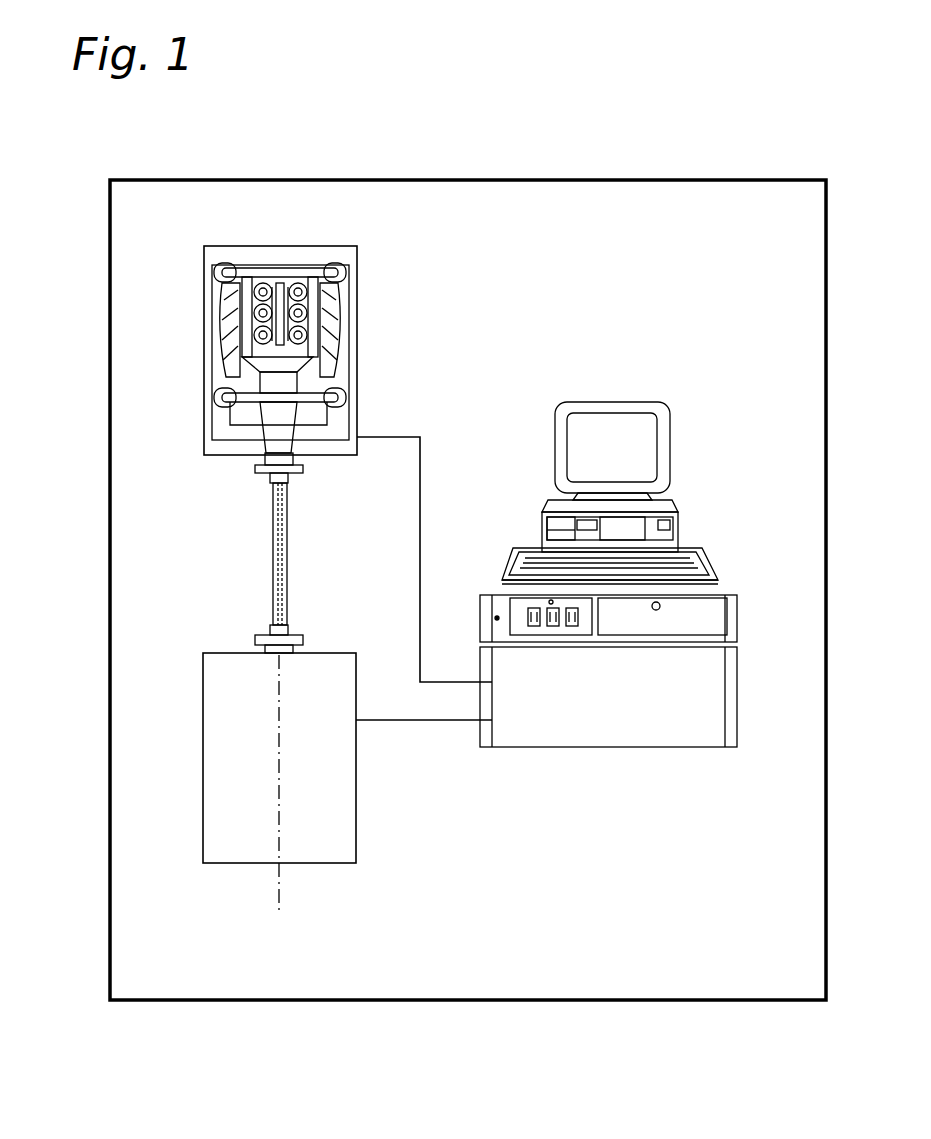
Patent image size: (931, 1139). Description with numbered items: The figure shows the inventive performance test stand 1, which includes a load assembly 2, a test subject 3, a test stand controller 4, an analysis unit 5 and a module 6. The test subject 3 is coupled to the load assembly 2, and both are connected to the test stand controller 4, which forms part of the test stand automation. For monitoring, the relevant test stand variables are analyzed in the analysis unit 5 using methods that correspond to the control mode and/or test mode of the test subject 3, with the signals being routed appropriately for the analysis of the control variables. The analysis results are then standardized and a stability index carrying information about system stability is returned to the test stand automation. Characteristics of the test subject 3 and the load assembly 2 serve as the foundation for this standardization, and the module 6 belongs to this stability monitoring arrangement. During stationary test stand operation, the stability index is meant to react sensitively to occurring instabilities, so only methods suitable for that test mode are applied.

The performance test stand 1 is at (728, 180).
The load assembly 2 is at (228, 788).
The test subject 3 is at (217, 302).
The test stand controller 4 is at (685, 736).
The analysis unit 5 is at (560, 628).
The module 6 is at (708, 617).